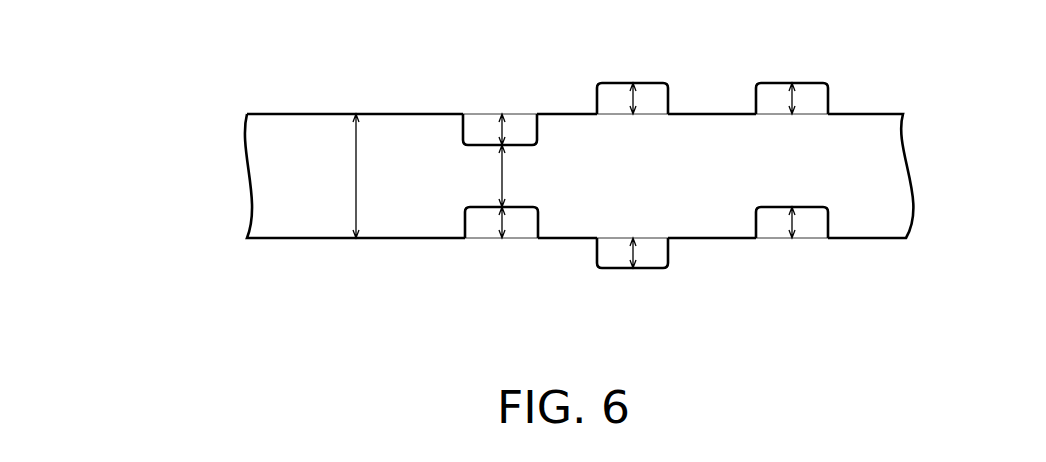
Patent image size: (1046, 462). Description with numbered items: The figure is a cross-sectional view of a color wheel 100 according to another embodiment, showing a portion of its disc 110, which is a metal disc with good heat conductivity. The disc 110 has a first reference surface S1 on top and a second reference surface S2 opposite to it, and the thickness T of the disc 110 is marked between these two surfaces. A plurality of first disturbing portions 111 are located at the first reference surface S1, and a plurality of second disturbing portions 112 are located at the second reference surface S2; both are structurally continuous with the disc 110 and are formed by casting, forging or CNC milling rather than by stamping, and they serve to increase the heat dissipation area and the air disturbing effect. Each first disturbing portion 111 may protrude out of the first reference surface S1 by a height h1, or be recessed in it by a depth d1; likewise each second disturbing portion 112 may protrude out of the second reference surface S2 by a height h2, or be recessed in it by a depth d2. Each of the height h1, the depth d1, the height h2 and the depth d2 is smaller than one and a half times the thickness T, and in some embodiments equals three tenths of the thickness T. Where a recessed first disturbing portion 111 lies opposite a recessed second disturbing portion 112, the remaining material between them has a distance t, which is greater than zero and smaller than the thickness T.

The color wheel 100 is at (240, 73).
The disc 110 is at (302, 125).
The first disturbing portions 111 is at (467, 129).
The second disturbing portions 112 is at (467, 222).
The first reference surface S1 is at (403, 113).
The second reference surface S2 is at (403, 239).
The thickness of the disc T is at (363, 176).
The distance between recessed first and second disturbing portions t is at (508, 176).
The depth of first disturbing portion d1 is at (505, 130).
The depth of second disturbing portion d2 is at (505, 222).
The height of first disturbing portion h1 is at (636, 100).
The height of second disturbing portion h2 is at (637, 252).